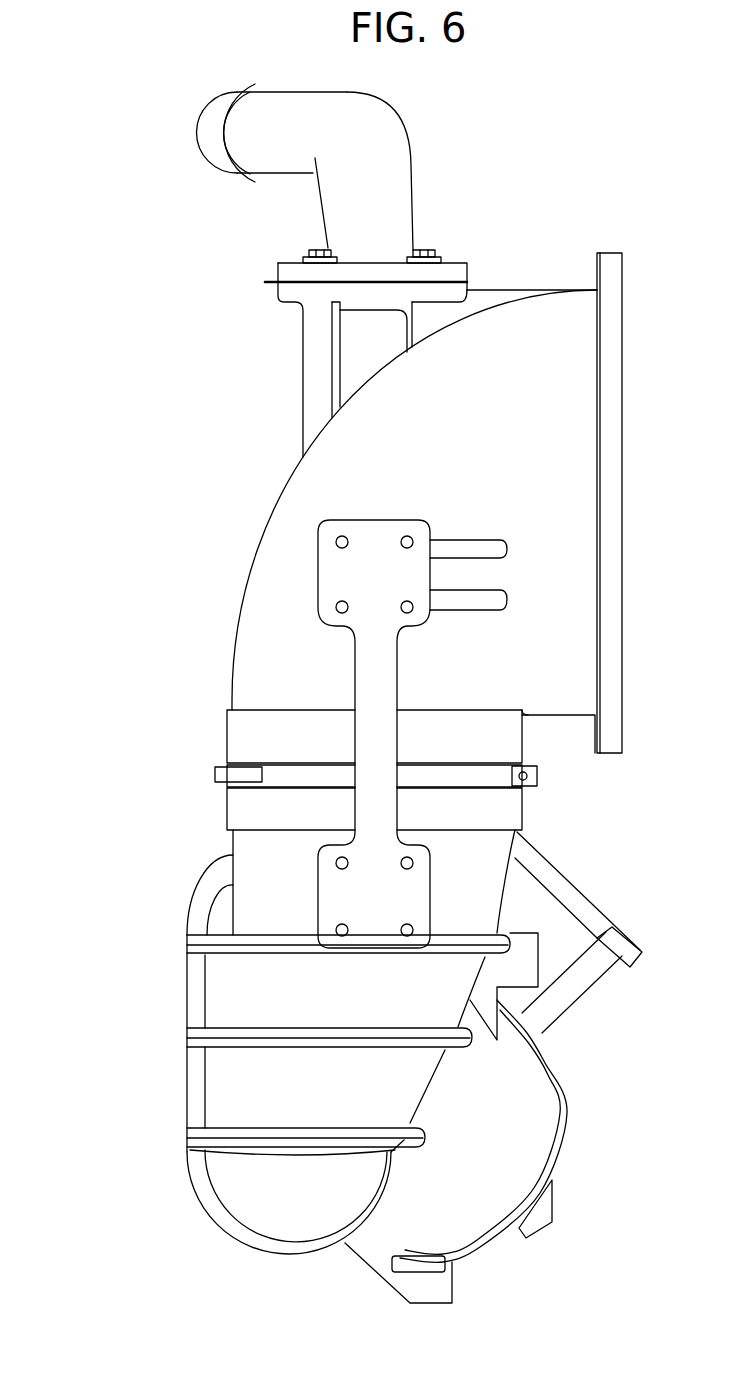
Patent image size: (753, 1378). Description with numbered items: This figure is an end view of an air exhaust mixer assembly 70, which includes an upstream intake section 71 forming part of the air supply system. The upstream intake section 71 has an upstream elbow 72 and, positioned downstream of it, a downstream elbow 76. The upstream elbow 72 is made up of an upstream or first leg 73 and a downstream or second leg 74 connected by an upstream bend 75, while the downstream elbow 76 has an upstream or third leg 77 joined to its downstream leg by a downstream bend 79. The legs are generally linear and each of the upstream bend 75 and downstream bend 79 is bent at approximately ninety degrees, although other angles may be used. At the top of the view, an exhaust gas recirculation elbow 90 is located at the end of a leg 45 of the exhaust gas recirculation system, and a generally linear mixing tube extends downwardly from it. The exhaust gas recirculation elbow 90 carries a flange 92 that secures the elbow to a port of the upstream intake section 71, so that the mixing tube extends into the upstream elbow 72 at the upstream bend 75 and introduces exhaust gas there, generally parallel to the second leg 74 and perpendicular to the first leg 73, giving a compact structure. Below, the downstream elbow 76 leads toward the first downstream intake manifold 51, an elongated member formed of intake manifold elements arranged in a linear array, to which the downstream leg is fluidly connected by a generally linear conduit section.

The leg 45 is at (295, 118).
The exhaust gas recirculation elbow 90 is at (367, 197).
The flange 92 is at (290, 275).
The first leg 73 is at (538, 337).
The air exhaust mixer assembly 70 is at (553, 133).
The upstream intake section 71 is at (197, 378).
The upstream elbow 72 is at (263, 602).
The second leg 74 is at (260, 655).
The upstream bend 75 is at (300, 495).
The third leg 77 is at (270, 892).
The downstream elbow 76 is at (228, 1090).
The downstream bend 79 is at (300, 1190).
The first downstream intake manifold 51 is at (585, 1075).